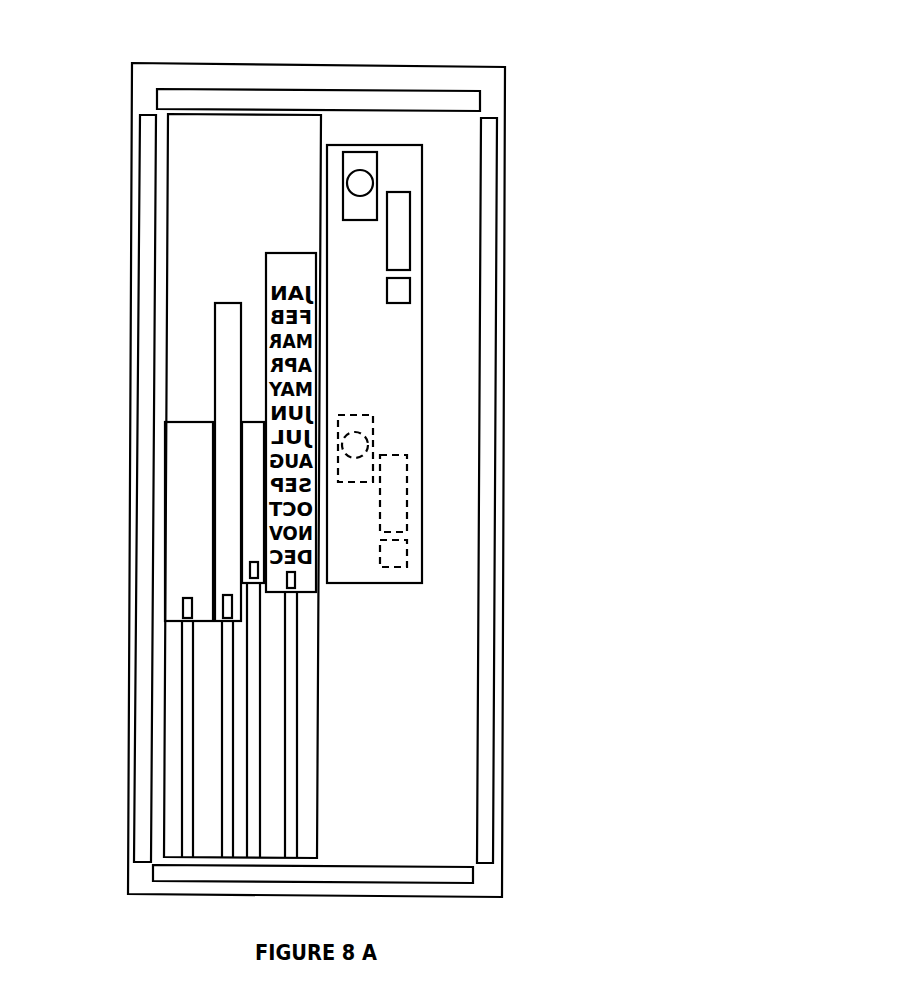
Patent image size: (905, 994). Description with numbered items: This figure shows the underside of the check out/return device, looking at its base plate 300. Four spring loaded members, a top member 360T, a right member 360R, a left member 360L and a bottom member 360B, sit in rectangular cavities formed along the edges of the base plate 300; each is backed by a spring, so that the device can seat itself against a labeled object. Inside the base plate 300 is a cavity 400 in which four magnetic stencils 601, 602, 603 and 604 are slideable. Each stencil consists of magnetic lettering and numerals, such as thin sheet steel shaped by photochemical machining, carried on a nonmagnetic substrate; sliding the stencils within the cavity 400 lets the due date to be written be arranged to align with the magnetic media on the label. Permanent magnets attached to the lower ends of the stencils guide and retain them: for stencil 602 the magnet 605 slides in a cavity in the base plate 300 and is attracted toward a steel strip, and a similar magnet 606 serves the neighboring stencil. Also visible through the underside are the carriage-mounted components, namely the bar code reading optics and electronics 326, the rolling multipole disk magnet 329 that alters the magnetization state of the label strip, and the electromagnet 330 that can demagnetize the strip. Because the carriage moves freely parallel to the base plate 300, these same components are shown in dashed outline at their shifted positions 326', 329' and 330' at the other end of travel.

The base plate 300 is at (493, 90).
The top spring loaded member 360T is at (343, 98).
The right spring loaded member 360R is at (148, 183).
The left spring loaded member 360L is at (490, 230).
The bottom spring loaded member 360B is at (418, 873).
The cavity 400 is at (225, 280).
The magnetic stencil 603 is at (295, 348).
The bar code reading optics and electronics 326 is at (470, 169).
The magnetization state altering magnet 329 is at (492, 218).
The magnetization state altering magnet 330 is at (492, 281).
The bar code reading optics and electronics (shifted position) 326' is at (471, 448).
The magnetization state altering magnet (shifted position) 329' is at (492, 493).
The magnetization state altering magnet (shifted position) 330' is at (492, 540).
The magnetic stencil 601 is at (167, 545).
The magnetic stencil 602 is at (215, 358).
The magnetic stencil 604 is at (252, 518).
The magnet 605 is at (225, 615).
The slider tab 606 is at (258, 572).